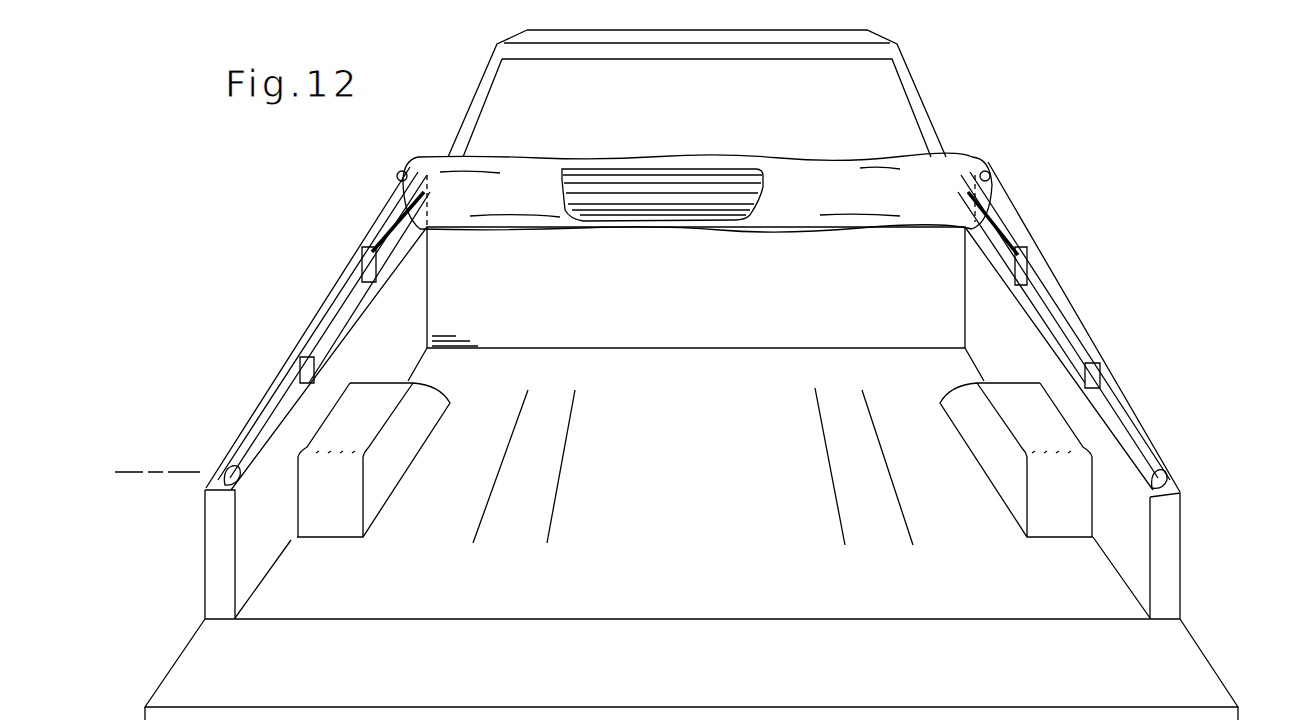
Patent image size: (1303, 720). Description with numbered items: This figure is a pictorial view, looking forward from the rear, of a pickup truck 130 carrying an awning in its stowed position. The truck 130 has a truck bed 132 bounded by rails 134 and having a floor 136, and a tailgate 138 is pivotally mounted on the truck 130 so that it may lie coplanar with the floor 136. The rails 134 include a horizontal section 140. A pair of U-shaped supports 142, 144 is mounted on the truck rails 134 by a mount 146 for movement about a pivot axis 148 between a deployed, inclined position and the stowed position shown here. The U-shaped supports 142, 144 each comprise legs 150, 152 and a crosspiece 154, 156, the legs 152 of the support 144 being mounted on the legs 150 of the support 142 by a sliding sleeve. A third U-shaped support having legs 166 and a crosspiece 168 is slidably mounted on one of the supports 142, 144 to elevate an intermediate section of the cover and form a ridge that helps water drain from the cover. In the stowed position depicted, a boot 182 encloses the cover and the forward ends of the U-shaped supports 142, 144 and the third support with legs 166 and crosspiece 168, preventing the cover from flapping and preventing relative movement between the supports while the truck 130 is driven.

The truck 130 is at (962, 80).
The truck bed 132 is at (1195, 465).
The rails 134 is at (427, 329).
The floor 136 is at (745, 539).
The tailgate 138 is at (942, 686).
The horizontal section 140 is at (232, 478).
The U-shaped support 142 is at (255, 396).
The U-shaped support 144 is at (418, 240).
The mount 146 is at (255, 490).
The pivot axis 148 is at (122, 470).
The legs 150 is at (290, 362).
The legs 152 is at (333, 348).
The crosspiece 154 is at (687, 157).
The crosspiece 156 is at (700, 222).
The legs 166 is at (395, 213).
The crosspiece 168 is at (744, 187).
The boot 182 is at (908, 212).